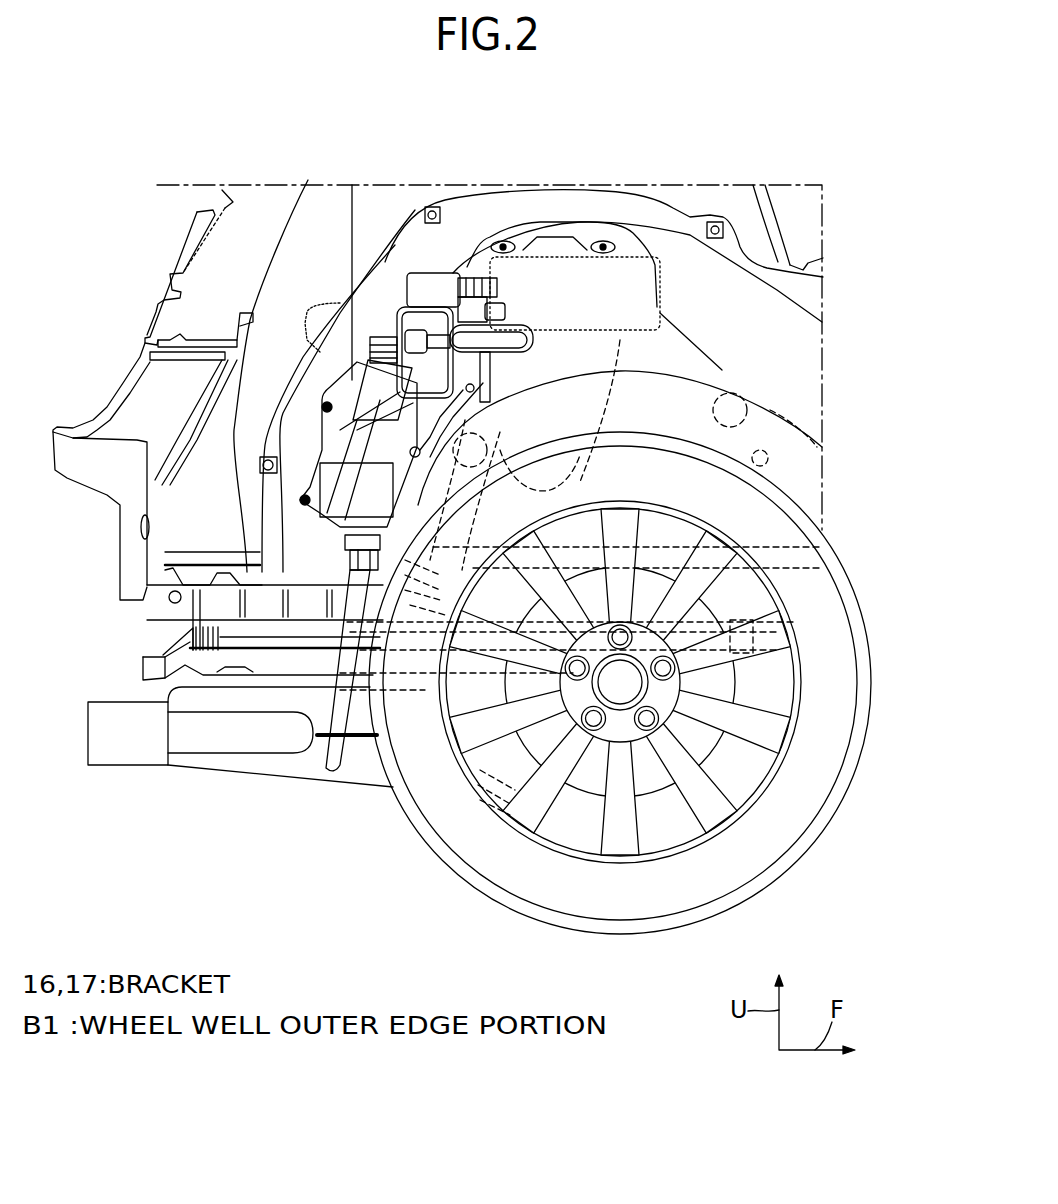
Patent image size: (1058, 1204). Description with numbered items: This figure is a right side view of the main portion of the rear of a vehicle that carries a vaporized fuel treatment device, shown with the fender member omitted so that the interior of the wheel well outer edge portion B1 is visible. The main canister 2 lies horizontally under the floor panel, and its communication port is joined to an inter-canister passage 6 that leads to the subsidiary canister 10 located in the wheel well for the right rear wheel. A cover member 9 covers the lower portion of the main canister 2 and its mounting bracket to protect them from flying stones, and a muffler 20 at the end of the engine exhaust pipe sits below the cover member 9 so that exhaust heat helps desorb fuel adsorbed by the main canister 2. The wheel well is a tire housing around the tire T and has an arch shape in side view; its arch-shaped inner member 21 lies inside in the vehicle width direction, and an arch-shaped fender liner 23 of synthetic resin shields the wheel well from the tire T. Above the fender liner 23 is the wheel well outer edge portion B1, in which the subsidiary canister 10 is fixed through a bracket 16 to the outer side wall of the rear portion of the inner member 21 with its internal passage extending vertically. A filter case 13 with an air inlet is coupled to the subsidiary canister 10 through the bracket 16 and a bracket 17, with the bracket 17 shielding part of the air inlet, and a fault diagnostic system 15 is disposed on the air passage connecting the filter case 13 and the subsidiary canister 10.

The main canister 2 is at (237, 640).
The inter-canister passage 6 is at (340, 567).
The cover member 9 is at (143, 668).
The subsidiary canister 10 is at (378, 343).
The filter case 13 is at (398, 313).
The fault diagnostic system 15 is at (428, 273).
The bracket 16 is at (365, 372).
The bracket 17 is at (327, 387).
The muffler 20 is at (262, 773).
The inner member 21 is at (813, 265).
The fender liner 23 is at (802, 460).
The wheel well outer edge portion B1 is at (783, 357).
The tire T is at (863, 618).